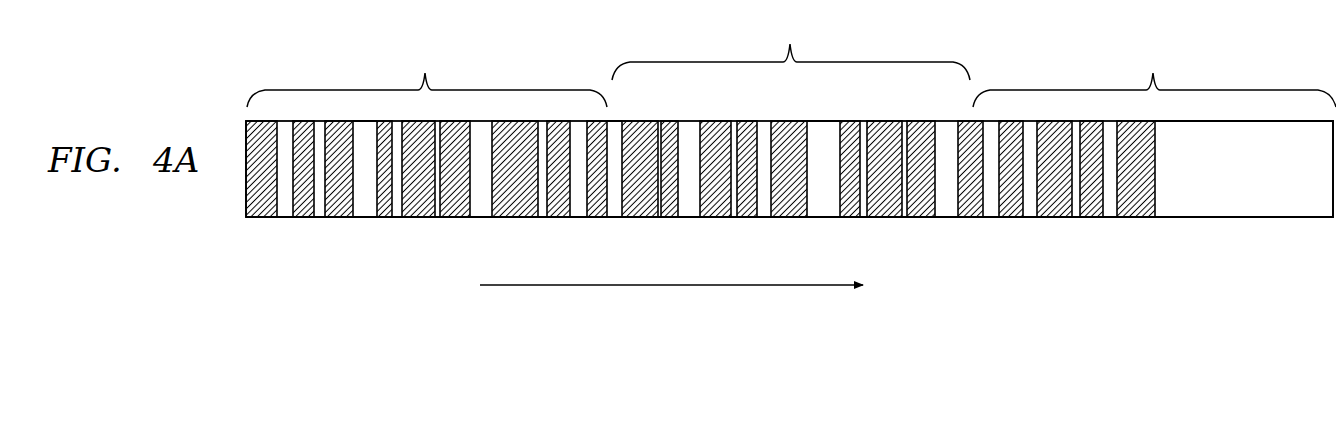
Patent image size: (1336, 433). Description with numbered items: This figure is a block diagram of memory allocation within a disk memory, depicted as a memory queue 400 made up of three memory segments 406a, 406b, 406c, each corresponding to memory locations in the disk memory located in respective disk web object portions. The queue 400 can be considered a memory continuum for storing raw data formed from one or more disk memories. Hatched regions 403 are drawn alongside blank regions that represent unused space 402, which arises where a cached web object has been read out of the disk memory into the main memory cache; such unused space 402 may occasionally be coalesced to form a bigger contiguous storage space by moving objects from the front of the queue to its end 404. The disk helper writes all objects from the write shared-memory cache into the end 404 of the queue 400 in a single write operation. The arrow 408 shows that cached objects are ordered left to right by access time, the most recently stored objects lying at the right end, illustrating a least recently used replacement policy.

The memory queue 400 is at (279, 247).
The unused space 402 is at (365, 202).
The reflective (hatched) region 403 is at (515, 202).
The end of the queue 404 is at (1168, 202).
The memory segment 406a is at (426, 130).
The memory segment 406b is at (791, 116).
The memory segment 406c is at (1147, 130).
The arrow 408 is at (663, 286).